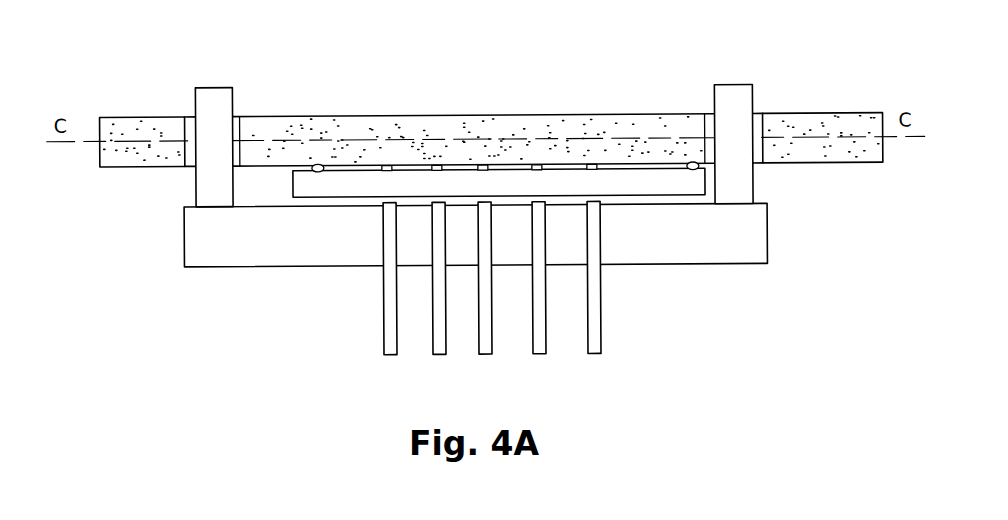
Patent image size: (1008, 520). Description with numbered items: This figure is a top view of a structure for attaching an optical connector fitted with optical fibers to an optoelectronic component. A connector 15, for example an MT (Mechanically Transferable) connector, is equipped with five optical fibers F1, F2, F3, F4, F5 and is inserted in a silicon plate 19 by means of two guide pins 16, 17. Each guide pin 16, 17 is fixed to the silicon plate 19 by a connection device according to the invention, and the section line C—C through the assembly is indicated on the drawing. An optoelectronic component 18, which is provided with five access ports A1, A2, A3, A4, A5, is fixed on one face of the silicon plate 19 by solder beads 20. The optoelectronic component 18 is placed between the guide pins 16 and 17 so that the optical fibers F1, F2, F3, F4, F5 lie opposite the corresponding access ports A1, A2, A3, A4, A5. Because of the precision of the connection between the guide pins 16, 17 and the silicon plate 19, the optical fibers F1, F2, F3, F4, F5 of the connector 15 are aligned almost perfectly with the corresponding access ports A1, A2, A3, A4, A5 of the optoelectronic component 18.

The connector 15 is at (705, 258).
The guide pin 16 is at (215, 97).
The guide pin 17 is at (737, 97).
The optoelectronic component 18 is at (665, 183).
The silicon plate 19 is at (812, 118).
The solder beads 20 is at (318, 163).
The access port A1 is at (387, 165).
The access port A2 is at (437, 165).
The access port A3 is at (483, 165).
The access port A4 is at (537, 165).
The access port A5 is at (592, 165).
The optical fiber F1 is at (390, 335).
The optical fiber F2 is at (438, 330).
The optical fiber F3 is at (488, 333).
The optical fiber F4 is at (538, 337).
The optical fiber F5 is at (595, 329).